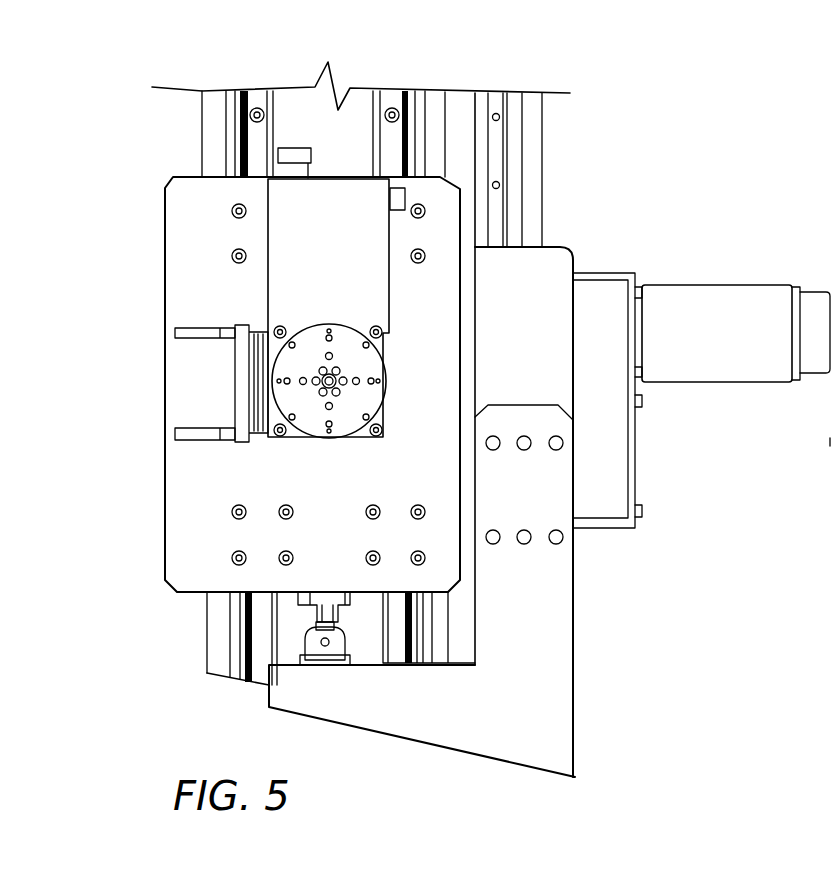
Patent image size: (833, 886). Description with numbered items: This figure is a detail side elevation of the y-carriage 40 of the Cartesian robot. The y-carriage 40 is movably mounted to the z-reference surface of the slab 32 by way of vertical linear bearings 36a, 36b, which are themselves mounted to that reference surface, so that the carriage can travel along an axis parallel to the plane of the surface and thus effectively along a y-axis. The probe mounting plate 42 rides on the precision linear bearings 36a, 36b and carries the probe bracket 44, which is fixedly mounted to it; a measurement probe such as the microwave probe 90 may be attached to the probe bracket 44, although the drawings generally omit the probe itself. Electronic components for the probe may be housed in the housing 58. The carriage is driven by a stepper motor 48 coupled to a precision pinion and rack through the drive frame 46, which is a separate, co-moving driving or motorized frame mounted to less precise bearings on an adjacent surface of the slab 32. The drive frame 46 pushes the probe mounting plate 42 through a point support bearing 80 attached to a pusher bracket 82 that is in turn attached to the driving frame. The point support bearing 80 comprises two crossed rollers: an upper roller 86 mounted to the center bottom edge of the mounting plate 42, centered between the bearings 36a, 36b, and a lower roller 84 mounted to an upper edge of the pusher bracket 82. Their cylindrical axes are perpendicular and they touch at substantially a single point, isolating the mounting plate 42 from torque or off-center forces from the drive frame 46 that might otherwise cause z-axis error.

The slab 32 is at (355, 98).
The vertical linear bearing 36a is at (256, 105).
The vertical linear bearing 36b is at (392, 101).
The y-carriage 40 is at (293, 371).
The mounting plate 42 is at (163, 223).
The probe bracket 44 is at (362, 400).
The drive frame 46 is at (573, 258).
The stepper motor 48 is at (737, 283).
The housing 58 is at (375, 285).
The point support bearing 80 is at (287, 640).
The pusher bracket 82 is at (562, 733).
The lower roller 84 is at (337, 635).
The upper roller 86 is at (317, 612).
The microwave probe 90 is at (832, 440).